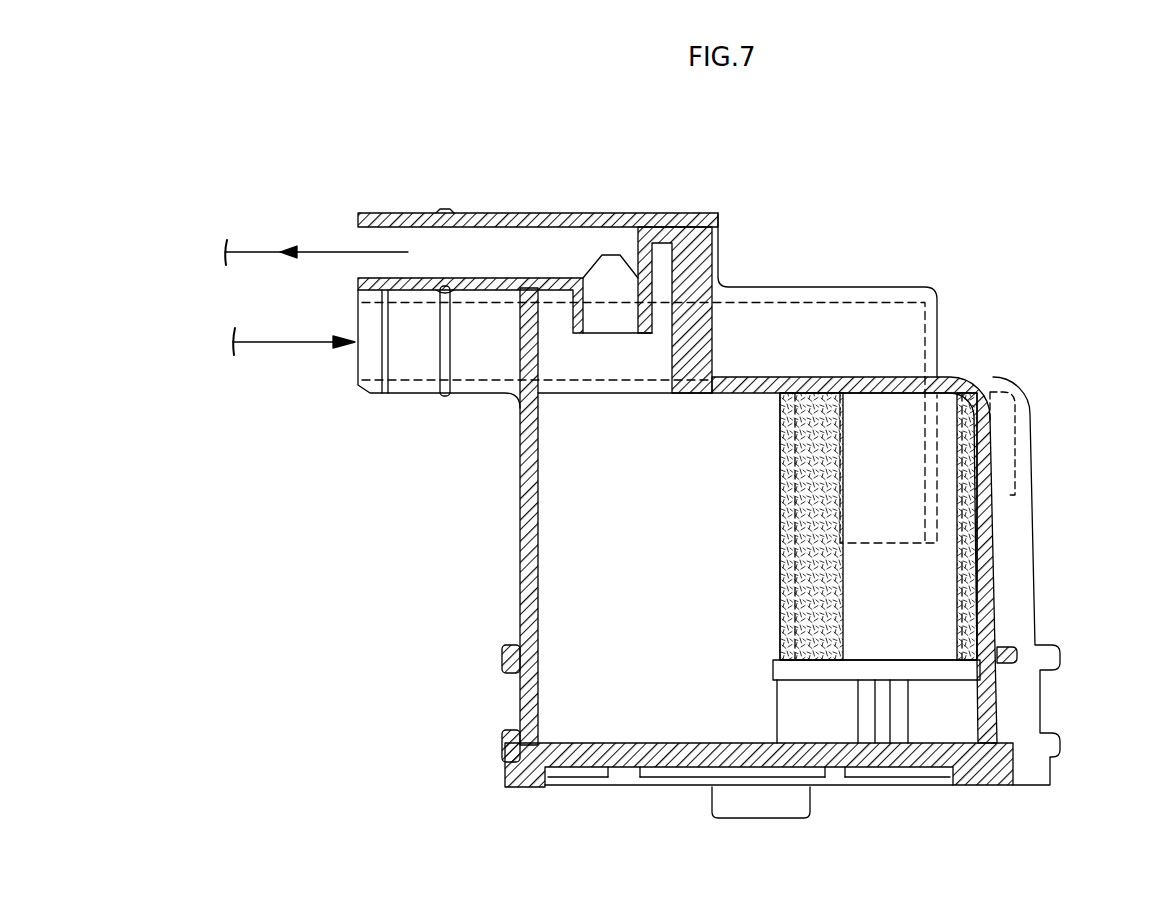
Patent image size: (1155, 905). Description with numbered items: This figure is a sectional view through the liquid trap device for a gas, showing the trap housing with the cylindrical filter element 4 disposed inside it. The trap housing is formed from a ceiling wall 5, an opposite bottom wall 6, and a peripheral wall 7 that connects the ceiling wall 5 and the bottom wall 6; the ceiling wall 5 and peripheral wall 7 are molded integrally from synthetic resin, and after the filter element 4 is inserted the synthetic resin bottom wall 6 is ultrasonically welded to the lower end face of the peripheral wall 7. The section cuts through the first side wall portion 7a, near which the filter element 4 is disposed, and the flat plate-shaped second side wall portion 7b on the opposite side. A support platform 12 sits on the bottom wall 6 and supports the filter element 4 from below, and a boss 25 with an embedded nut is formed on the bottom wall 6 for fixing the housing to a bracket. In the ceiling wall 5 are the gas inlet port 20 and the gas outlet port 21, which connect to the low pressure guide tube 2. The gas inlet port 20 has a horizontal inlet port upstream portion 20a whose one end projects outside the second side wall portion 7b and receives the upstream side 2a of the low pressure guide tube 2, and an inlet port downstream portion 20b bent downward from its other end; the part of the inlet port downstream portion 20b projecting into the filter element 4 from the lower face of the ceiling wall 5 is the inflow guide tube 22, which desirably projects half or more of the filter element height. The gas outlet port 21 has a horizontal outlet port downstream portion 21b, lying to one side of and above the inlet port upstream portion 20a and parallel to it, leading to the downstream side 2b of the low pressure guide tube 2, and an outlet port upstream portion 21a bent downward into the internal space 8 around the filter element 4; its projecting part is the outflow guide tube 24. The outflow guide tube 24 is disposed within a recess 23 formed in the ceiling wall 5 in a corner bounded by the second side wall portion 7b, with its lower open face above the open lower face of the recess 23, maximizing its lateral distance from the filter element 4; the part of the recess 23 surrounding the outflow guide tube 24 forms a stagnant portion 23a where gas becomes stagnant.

The low pressure guide tube 2 is at (575, 354).
The upstream side of the low pressure guide tube 2a is at (293, 345).
The downstream side of the low pressure guide tube 2b is at (303, 257).
The filter element 4 is at (781, 530).
The ceiling wall 5 is at (742, 390).
The bottom wall 6 is at (673, 775).
The peripheral wall 7 is at (772, 537).
The first side wall portion 7a is at (1012, 572).
The second side wall portion 7b is at (527, 545).
The internal space 8 is at (667, 563).
The support platform 12 is at (778, 675).
The gas inlet port 20 is at (851, 353).
The inlet port upstream portion 20a is at (765, 312).
The inlet port downstream portion 20b is at (917, 407).
The gas outlet port 21 is at (574, 195).
The outlet port upstream portion 21a is at (615, 287).
The outlet port downstream portion 21b is at (543, 194).
The inflow guide tube 22 is at (940, 432).
The recess 23 is at (601, 298).
The stagnant portion 23a is at (664, 257).
The outflow guide tube 24 is at (578, 333).
The boss 25 is at (760, 808).